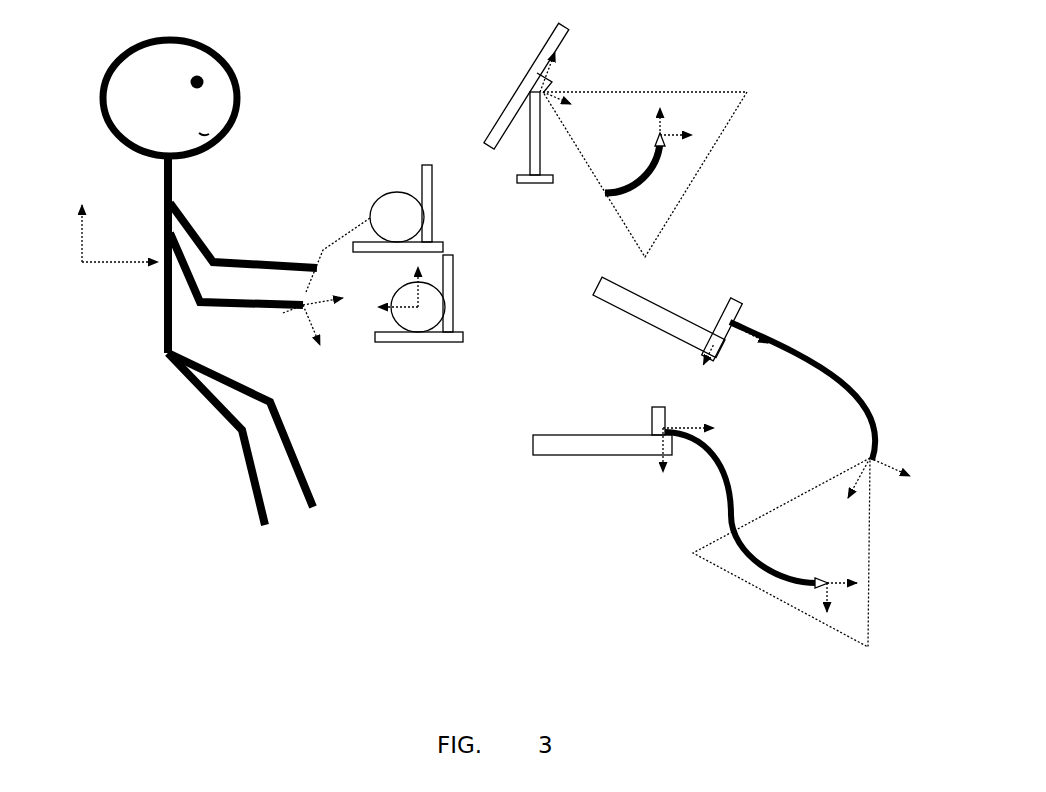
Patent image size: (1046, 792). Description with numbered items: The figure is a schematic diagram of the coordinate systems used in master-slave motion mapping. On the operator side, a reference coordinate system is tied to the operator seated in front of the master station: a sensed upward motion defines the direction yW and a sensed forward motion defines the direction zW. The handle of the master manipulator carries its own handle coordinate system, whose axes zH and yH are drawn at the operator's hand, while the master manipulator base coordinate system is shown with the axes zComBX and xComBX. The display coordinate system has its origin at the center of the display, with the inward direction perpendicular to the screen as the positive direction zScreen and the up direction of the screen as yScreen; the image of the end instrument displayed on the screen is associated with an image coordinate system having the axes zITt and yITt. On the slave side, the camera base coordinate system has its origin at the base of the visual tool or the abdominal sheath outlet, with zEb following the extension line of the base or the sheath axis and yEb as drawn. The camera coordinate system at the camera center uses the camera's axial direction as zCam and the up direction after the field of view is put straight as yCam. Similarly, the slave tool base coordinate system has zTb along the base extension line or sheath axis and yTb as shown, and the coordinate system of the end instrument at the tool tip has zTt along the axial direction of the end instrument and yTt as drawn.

The upward direction of reference coordinate system yW is at (63, 233).
The forward direction of reference coordinate system zW is at (120, 291).
The z axis of handle coordinate system zH is at (326, 296).
The y axis of handle coordinate system yH is at (315, 347).
The z axis of master manipulator base coordinate system zComBX is at (464, 285).
The x axis of master manipulator base coordinate system xComBX is at (426, 353).
The up direction of display coordinate system yScreen is at (510, 72).
The inward direction of display coordinate system zScreen is at (589, 101).
The z axis of image coordinate system of end instrument zITt is at (683, 114).
The y axis of image coordinate system of end instrument yITt is at (695, 149).
The y direction of camera base coordinate system yEb is at (724, 375).
The z direction of camera base coordinate system zEb is at (771, 362).
The axial direction of camera coordinate system zCam is at (859, 500).
The up direction of camera coordinate system yCam is at (912, 485).
The z direction of slave tool base coordinate system zTb is at (708, 445).
The y direction of slave tool base coordinate system yTb is at (675, 470).
The axial direction of end instrument coordinate system zTt is at (861, 598).
The y direction of end instrument coordinate system yTt is at (847, 623).